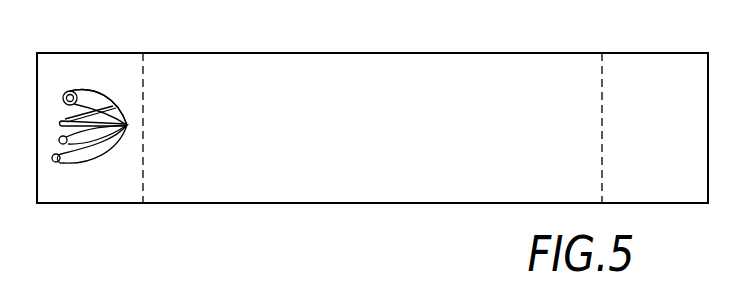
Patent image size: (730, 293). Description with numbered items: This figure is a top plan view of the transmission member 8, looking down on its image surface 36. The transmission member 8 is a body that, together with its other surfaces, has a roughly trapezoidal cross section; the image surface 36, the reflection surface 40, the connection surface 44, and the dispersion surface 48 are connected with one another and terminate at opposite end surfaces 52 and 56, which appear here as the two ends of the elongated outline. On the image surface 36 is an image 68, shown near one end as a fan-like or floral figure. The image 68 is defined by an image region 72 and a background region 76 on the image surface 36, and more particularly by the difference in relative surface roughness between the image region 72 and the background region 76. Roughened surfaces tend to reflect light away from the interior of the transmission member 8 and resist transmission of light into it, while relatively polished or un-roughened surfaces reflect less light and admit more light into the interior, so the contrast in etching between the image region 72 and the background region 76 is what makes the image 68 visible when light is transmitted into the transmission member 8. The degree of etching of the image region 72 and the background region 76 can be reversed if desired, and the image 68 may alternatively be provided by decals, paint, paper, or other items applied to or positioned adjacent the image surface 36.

The transmission member 8 is at (260, 206).
The image surface 36 is at (318, 125).
The reflection surface 40 is at (88, 192).
The connection surface 44 is at (358, 185).
The dispersion surface 48 is at (642, 70).
The end surface 52 is at (440, 204).
The end surface 56 is at (345, 54).
The image 68 is at (75, 86).
The image region 72 is at (95, 88).
The background region 76 is at (140, 97).